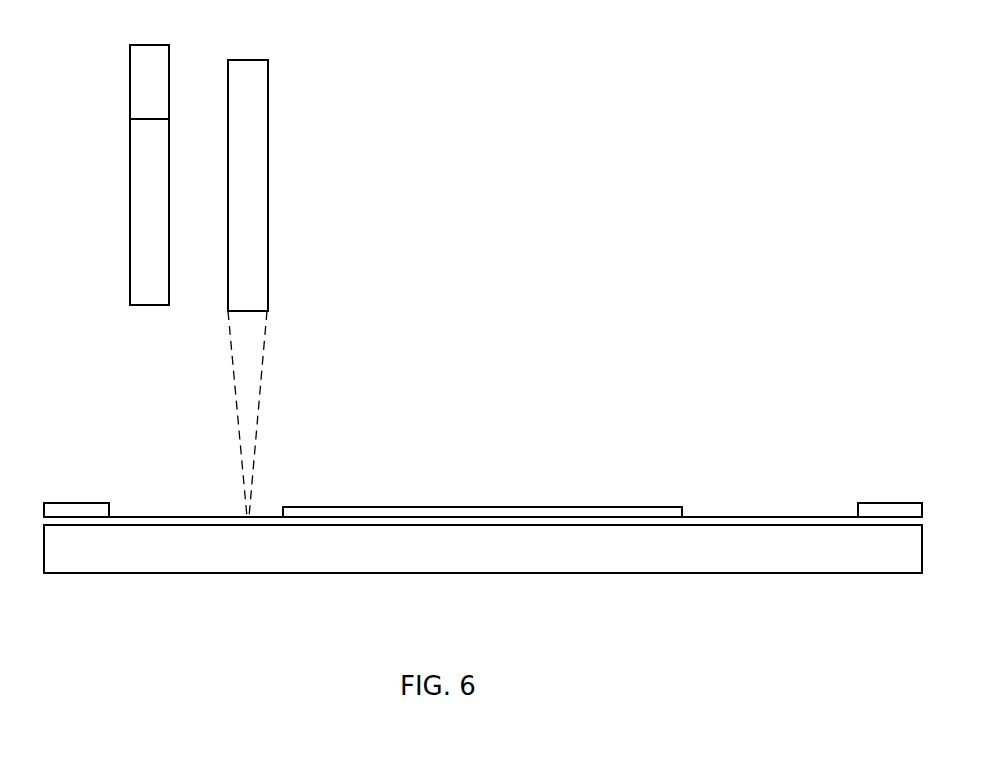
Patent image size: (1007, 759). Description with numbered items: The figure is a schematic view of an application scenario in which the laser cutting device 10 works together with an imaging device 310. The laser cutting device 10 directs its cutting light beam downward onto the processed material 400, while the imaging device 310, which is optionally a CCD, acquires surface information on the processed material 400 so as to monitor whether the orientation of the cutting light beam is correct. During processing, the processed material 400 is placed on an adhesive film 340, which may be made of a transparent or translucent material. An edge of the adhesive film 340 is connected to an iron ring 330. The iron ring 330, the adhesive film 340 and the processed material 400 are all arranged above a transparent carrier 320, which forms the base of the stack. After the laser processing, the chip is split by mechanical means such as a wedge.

The laser cutting device 10 is at (268, 175).
The imaging device 310 is at (150, 268).
The transparent carrier 320 is at (750, 560).
The iron ring 330 is at (898, 503).
The adhesive film 340 is at (752, 517).
The processed material 400 is at (582, 507).